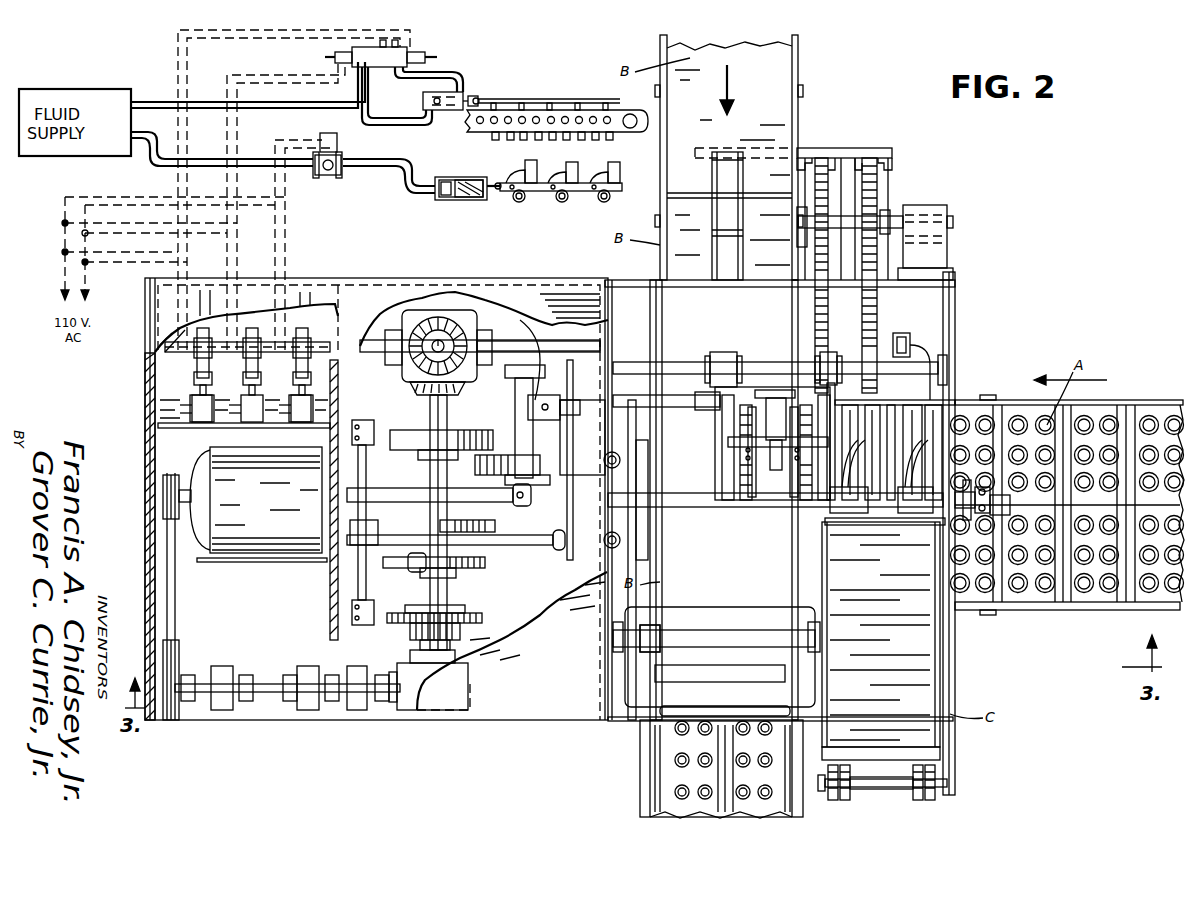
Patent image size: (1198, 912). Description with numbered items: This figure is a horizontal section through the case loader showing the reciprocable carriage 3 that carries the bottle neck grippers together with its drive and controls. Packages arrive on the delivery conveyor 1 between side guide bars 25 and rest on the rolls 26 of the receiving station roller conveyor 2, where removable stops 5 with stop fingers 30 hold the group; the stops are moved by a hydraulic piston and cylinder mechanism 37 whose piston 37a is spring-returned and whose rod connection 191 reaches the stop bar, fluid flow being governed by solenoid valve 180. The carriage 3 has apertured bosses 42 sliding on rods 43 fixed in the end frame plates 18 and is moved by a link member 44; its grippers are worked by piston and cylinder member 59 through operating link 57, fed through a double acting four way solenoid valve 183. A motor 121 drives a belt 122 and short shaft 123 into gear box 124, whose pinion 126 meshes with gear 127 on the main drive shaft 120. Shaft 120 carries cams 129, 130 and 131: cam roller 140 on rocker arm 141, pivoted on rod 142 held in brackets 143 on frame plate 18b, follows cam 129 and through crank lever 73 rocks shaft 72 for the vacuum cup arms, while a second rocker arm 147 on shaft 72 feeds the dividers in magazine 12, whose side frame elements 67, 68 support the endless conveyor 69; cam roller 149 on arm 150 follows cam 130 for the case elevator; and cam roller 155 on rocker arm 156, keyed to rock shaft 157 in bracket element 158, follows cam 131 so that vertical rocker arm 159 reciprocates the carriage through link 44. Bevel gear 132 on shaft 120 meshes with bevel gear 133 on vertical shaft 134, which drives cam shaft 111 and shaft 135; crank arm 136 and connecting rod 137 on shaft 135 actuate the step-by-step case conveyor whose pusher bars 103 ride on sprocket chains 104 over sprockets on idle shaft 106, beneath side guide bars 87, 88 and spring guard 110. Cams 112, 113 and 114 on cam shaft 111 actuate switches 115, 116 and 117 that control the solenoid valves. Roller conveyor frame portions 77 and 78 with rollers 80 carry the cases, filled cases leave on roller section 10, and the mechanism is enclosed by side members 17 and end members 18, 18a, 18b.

The double acting four way solenoid valve 183 is at (410, 50).
The operating link 57 is at (466, 94).
The reciprocable carriage 3 is at (538, 97).
The removable stops 5 is at (592, 178).
The stop fingers 30 is at (532, 162).
The piston rod connection 191 is at (472, 178).
The hydraulic piston and cylinder operating mechanism 37 is at (441, 201).
The piston 37a is at (455, 200).
The solenoid valve 180 is at (327, 178).
The cam shaft 111 is at (292, 338).
The cam 112 is at (205, 326).
The cam 113 is at (252, 326).
The cam 114 is at (305, 326).
The switch 115 is at (158, 421).
The switch 116 is at (244, 430).
The switch 117 is at (304, 430).
The end members 18 is at (584, 284).
The end member 18a is at (145, 462).
The end member 18b is at (330, 614).
The motor 121 is at (240, 528).
The belt 122 is at (175, 613).
The short shaft 123 is at (268, 684).
The gear box 124 is at (442, 700).
The main drive shaft 120 is at (430, 423).
The bevel gear 133 is at (442, 312).
The vertical shaft 134 is at (422, 312).
The bevel gear 132 is at (465, 388).
The shaft 135 is at (526, 350).
The rocker arm 159 is at (524, 345).
The cam 131 is at (400, 432).
The brackets 143 is at (364, 520).
The rod 142 is at (378, 525).
The cam roller 149 is at (412, 495).
The arm 150 is at (458, 496).
The rock shaft 157 is at (520, 410).
The rocker arm 156 is at (523, 446).
The cam roller 155 is at (498, 462).
The bracket element 158 is at (560, 445).
The rocker arm 141 is at (500, 545).
The cam 130 is at (495, 524).
The crank lever 73 is at (560, 550).
The cam 129 is at (475, 568).
The cam roller 140 is at (410, 565).
The pinion 126 is at (402, 625).
The gear 127 is at (482, 622).
The side guide bar 87 is at (660, 258).
The side guide bar 88 is at (797, 252).
The spring guard 110 is at (725, 250).
The pusher bars 103 is at (837, 150).
The sprocket chains 104 is at (860, 197).
The idle shaft 106 is at (950, 215).
The side members 17 is at (890, 288).
The side frame portion 77 is at (650, 300).
The rods 43 is at (684, 364).
The link member 44 is at (634, 395).
The apertured bosses 42 is at (722, 352).
The piston and cylinder member 59 is at (775, 392).
The rock shaft 72 is at (682, 498).
The anti-friction rollers 80 is at (723, 670).
The side frame portion 78 is at (648, 672).
The side frame element 68 is at (818, 672).
The crank arm 136 is at (901, 333).
The connecting rod 137 is at (924, 360).
The rolls 26 is at (918, 420).
The side frame element 67 is at (945, 670).
The endless conveyor 69 is at (945, 782).
The magazine 12 is at (902, 795).
The roller section 10 is at (642, 766).
The side guide bars 25 is at (1127, 403).
The second rocker arm 147 is at (982, 485).
The roller conveyor 2 is at (972, 390).
The delivery conveyor 1 is at (1096, 618).